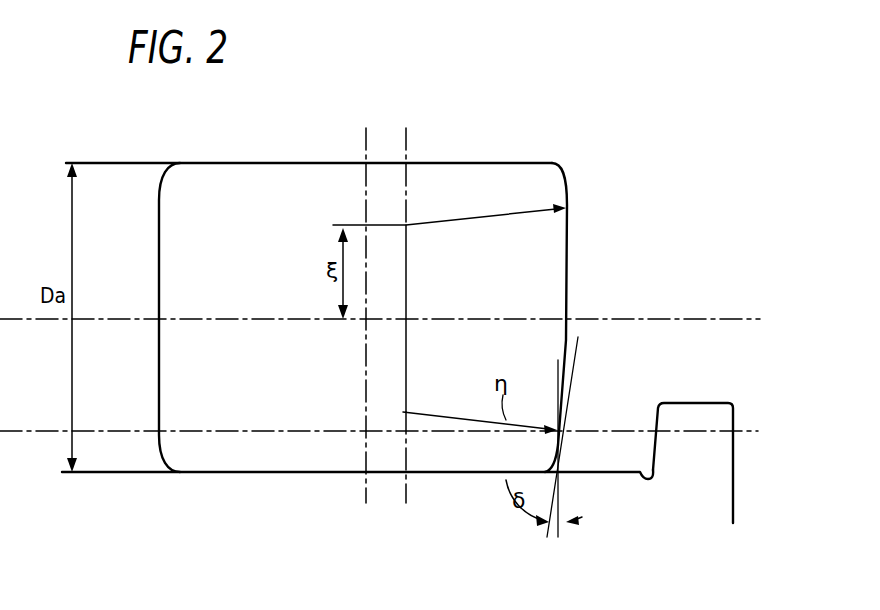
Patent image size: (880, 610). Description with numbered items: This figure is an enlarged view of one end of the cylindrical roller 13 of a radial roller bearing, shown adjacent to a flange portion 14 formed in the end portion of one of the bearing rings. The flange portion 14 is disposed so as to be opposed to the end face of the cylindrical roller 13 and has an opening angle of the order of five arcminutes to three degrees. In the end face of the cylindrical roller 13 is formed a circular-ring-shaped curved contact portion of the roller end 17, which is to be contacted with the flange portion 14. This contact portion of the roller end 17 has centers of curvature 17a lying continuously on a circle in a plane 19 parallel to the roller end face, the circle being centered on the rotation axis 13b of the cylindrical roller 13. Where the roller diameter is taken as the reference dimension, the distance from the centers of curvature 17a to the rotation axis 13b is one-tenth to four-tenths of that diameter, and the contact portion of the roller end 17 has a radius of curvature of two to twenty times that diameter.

The cylindrical roller 13 is at (450, 165).
The rotation axis 13b is at (662, 316).
The flange portion 14 is at (694, 422).
The contact portion of the roller end 17 is at (567, 185).
The centers of curvature 17a is at (406, 225).
The plane 19 is at (405, 128).